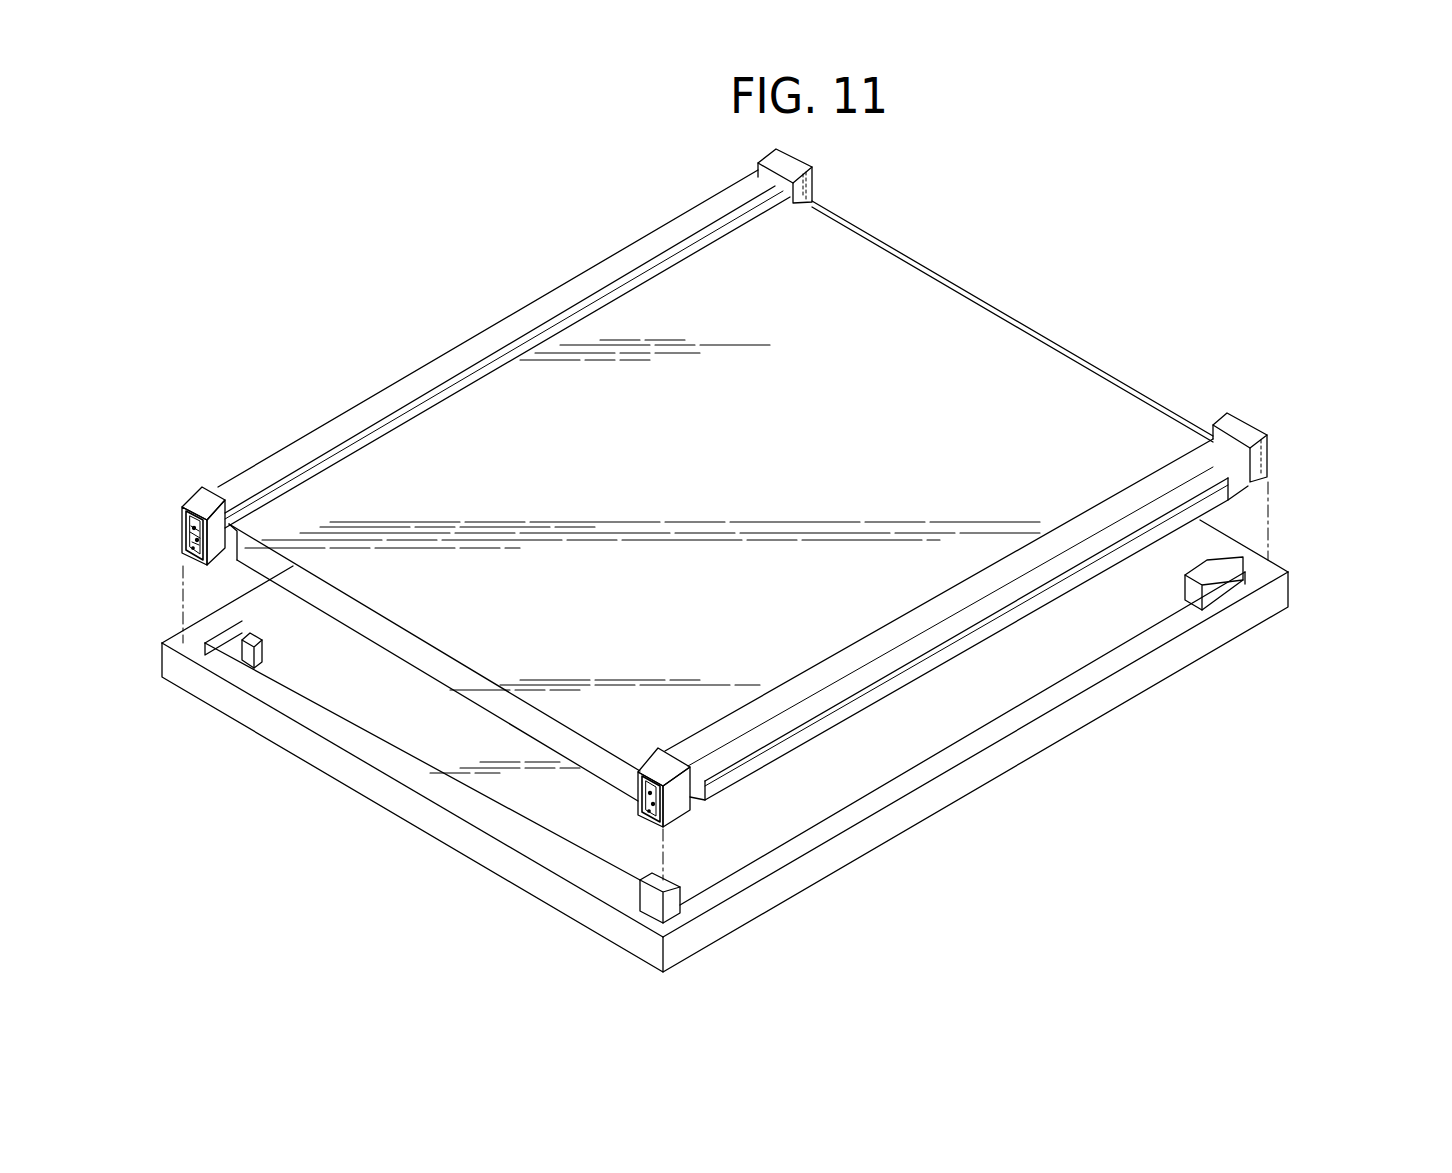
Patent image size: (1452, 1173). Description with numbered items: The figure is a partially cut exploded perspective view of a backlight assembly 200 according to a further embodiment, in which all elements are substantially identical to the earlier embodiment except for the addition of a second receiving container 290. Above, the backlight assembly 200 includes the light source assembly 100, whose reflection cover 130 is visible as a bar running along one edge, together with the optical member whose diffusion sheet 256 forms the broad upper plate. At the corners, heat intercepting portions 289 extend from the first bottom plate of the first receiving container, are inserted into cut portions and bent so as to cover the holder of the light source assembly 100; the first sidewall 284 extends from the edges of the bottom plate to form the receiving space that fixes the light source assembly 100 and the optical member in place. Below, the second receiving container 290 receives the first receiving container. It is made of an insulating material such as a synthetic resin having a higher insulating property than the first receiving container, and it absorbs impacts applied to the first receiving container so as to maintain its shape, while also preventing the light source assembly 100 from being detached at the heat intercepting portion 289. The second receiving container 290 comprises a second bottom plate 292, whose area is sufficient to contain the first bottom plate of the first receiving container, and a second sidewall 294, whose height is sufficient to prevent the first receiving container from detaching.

The light source assembly 100 is at (366, 338).
The reflection cover 130 is at (316, 428).
The heat intercepting portion 289 is at (204, 491).
The backlight assembly 200 is at (1092, 312).
The diffusion sheet 256 is at (1114, 407).
The first sidewall 284 is at (470, 676).
The second receiving container 290 is at (1314, 608).
The second bottom plate 292 is at (828, 787).
The second sidewall 294 is at (1005, 752).